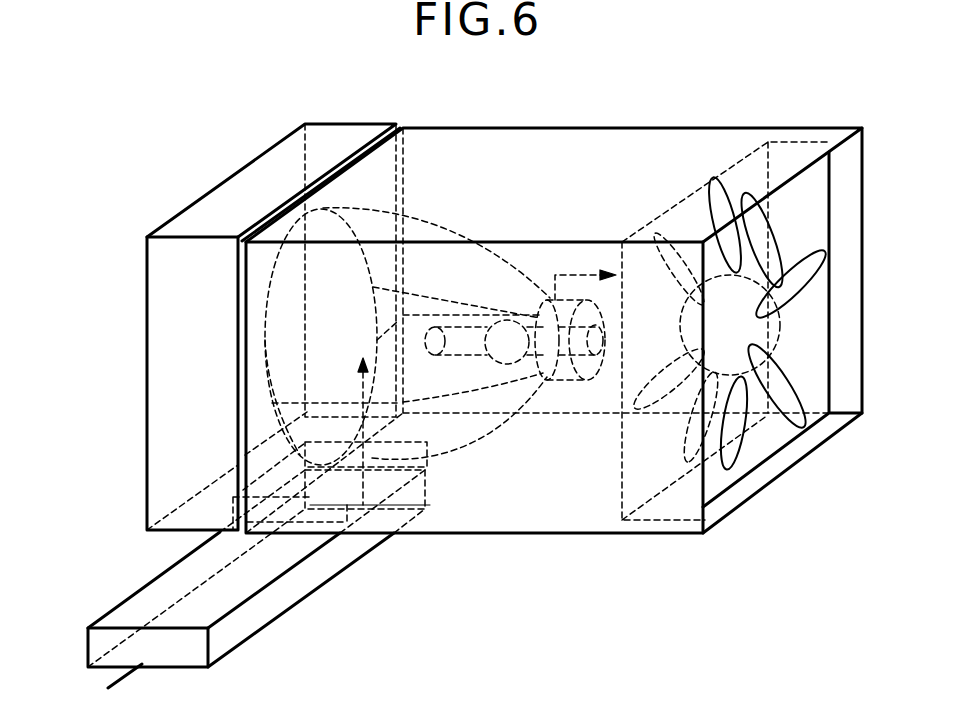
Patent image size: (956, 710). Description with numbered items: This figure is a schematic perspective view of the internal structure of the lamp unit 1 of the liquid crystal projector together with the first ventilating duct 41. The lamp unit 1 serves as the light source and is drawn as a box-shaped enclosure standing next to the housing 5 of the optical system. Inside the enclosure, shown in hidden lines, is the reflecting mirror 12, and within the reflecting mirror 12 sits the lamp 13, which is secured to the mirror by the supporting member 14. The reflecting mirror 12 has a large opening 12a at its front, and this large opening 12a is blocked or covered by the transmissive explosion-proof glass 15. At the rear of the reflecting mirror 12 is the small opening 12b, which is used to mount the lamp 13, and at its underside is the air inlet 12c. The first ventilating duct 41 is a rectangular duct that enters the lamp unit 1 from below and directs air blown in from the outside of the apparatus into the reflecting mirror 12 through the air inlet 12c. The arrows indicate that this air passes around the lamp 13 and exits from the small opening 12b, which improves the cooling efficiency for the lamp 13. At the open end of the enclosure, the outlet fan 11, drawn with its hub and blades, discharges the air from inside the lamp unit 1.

The lamp unit 1 is at (528, 548).
The housing of the optical system 5 is at (243, 167).
The outlet fan 11 is at (737, 457).
The reflecting mirror 12 is at (512, 420).
The large opening 12a is at (267, 373).
The small opening 12b is at (541, 320).
The air inlet 12c is at (372, 455).
The lamp 13 is at (477, 328).
The supporting member 14 is at (575, 382).
The transmissive explosion-proof glass 15 is at (287, 345).
The first ventilating duct 41 is at (338, 573).